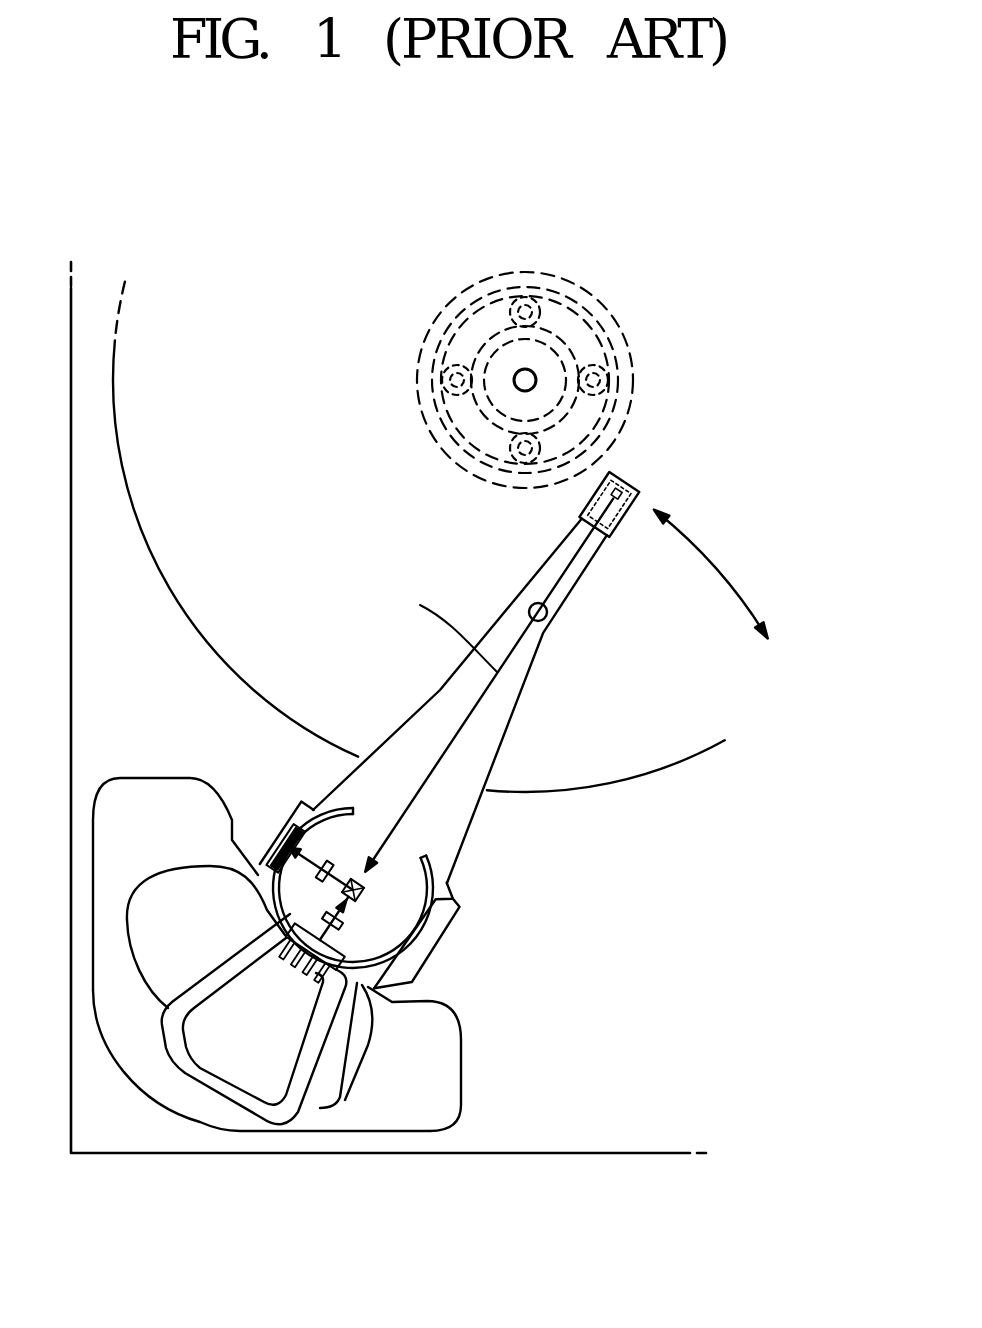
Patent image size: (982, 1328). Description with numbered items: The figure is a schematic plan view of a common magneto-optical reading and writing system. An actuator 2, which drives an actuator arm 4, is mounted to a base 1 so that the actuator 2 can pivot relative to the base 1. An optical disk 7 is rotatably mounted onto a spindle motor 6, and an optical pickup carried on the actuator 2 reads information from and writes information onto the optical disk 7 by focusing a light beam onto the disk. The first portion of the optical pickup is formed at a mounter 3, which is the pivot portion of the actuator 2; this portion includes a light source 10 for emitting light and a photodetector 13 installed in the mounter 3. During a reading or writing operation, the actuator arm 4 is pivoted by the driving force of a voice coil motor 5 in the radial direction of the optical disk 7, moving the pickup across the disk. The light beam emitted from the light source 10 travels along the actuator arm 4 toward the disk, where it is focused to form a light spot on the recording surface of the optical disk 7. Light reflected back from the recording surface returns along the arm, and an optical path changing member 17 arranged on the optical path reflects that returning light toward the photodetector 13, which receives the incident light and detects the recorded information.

The base 1 is at (148, 1153).
The actuator 2 is at (468, 911).
The mounter 3 is at (312, 817).
The actuator arm 4 is at (503, 692).
The voice coil motor 5 is at (458, 1072).
The spindle motor 6 is at (432, 402).
The optical disk 7 is at (620, 783).
The light source 10 is at (338, 962).
The photodetector 13 is at (266, 845).
The optical path changing member 17 is at (373, 893).